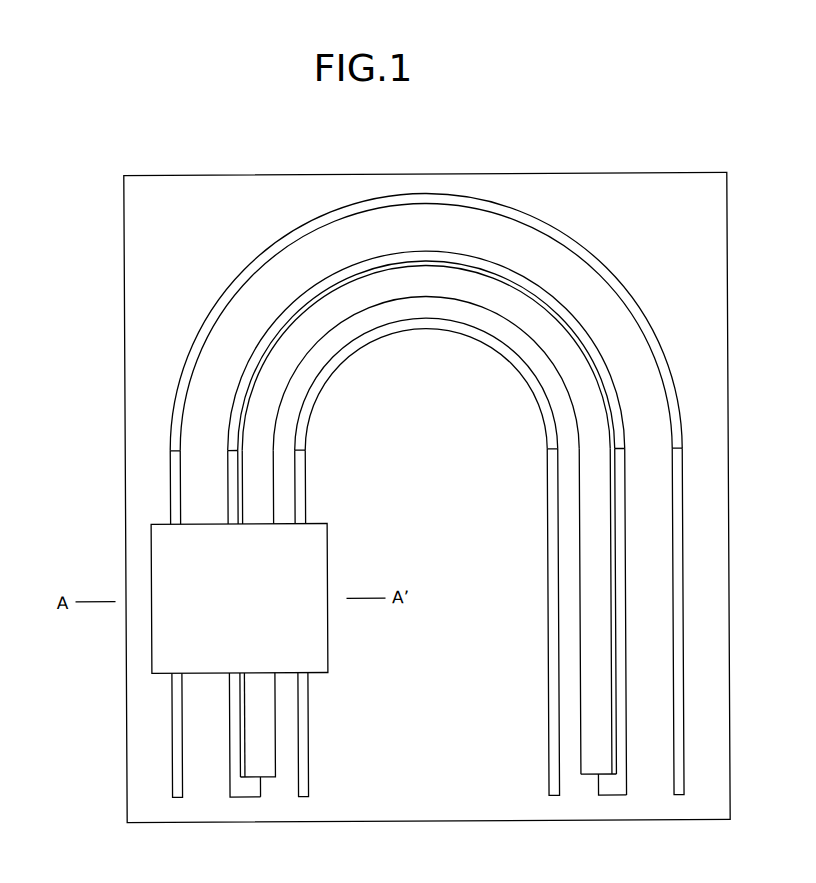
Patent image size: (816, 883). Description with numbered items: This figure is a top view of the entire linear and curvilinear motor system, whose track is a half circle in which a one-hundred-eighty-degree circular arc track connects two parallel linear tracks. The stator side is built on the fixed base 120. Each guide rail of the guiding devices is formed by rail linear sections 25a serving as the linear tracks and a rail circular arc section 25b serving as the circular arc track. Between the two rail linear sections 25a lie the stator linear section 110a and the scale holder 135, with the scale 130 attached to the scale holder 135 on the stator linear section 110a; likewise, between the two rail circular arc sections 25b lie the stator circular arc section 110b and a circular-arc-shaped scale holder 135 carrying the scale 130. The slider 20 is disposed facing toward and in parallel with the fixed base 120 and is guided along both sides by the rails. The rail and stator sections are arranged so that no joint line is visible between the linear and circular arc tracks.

The fixed base 120 is at (269, 193).
The stator circular arc section 110b is at (277, 327).
The stator linear section 110a is at (241, 789).
The rail circular arc section 25b is at (187, 377).
The rail linear section 25a is at (175, 693).
The slider 20 is at (170, 550).
The scale 130 is at (240, 743).
The scale holder 135 is at (263, 760).